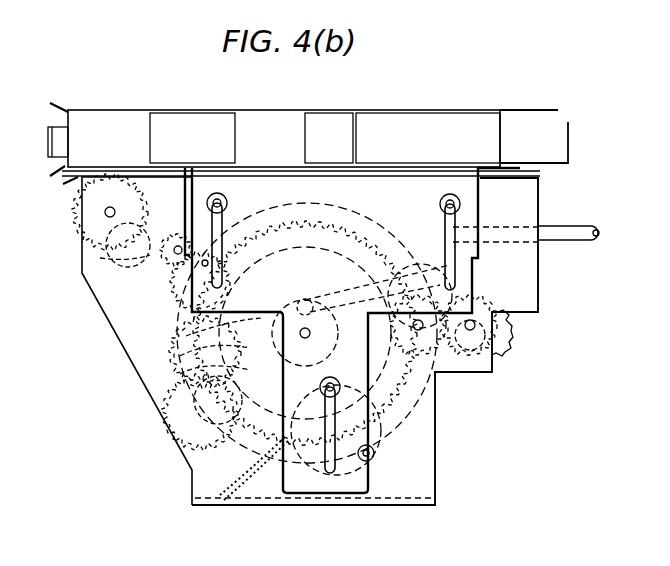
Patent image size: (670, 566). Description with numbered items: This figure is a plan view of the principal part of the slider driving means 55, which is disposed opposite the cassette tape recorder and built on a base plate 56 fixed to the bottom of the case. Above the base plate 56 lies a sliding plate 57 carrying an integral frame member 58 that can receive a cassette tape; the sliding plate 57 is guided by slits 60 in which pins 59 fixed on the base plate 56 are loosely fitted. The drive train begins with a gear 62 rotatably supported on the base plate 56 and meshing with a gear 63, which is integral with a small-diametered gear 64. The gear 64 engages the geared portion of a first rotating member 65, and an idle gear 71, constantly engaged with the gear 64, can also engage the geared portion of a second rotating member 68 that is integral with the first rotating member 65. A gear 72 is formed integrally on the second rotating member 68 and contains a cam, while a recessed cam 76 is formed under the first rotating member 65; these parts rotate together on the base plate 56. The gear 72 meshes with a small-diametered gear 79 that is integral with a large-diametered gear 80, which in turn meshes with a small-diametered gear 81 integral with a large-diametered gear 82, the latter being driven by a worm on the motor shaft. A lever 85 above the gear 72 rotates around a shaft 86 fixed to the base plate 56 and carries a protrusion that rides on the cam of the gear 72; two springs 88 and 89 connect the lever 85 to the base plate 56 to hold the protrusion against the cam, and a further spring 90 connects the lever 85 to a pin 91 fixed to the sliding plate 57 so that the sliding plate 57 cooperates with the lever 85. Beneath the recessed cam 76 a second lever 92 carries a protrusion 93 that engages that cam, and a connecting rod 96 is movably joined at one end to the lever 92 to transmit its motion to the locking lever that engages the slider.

The slider driving means 55 is at (113, 456).
The base plate 56 is at (436, 446).
The sliding plate 57 is at (346, 492).
The frame member 58 is at (415, 112).
The pins 59 is at (212, 195).
The slits 60 is at (222, 215).
The gear 62 is at (76, 224).
The gear 63 is at (100, 256).
The small-diametered gear 64 is at (160, 262).
The first rotating member 65 is at (165, 327).
The second rotating member 68 is at (186, 336).
The idle gear 71 is at (170, 284).
The gear 72 is at (180, 356).
The recessed cam 76 is at (180, 374).
The small-diametered gear 79 is at (442, 372).
The large-diametered gear 80 is at (478, 375).
The small-diametered gear 81 is at (492, 358).
The large-diametered gear 82 is at (508, 338).
The lever 85 is at (175, 422).
The shaft 86 is at (195, 398).
The spring 88 is at (243, 500).
The spring 89 is at (268, 505).
The spring 90 is at (382, 437).
The pin 91 is at (370, 462).
The lever 92 is at (413, 265).
The protrusion 93 is at (305, 300).
The connecting rod 96 is at (573, 230).